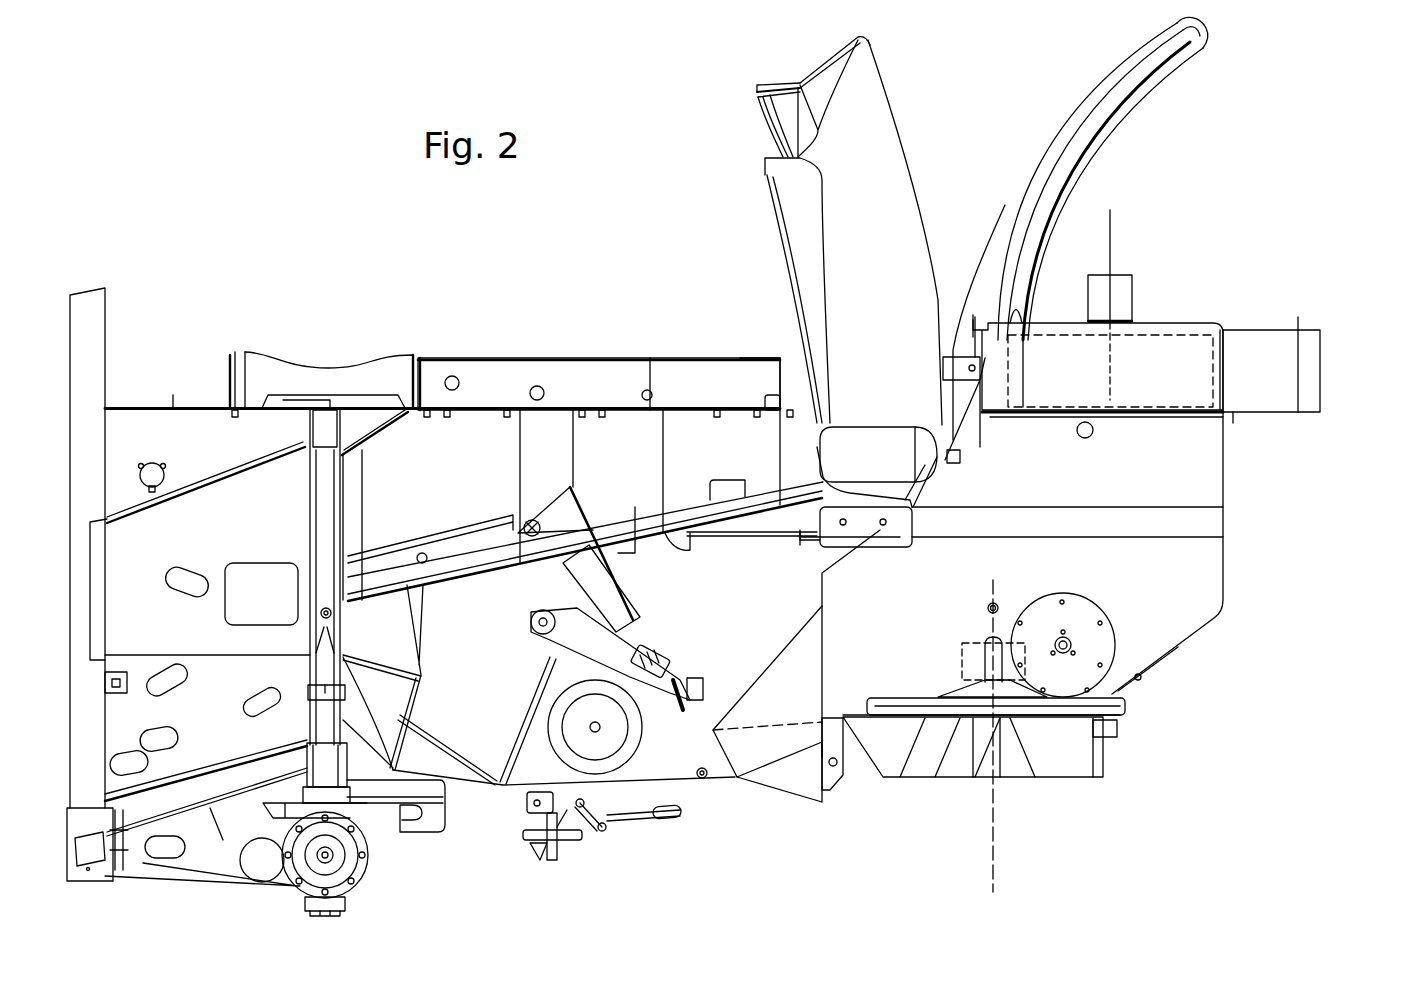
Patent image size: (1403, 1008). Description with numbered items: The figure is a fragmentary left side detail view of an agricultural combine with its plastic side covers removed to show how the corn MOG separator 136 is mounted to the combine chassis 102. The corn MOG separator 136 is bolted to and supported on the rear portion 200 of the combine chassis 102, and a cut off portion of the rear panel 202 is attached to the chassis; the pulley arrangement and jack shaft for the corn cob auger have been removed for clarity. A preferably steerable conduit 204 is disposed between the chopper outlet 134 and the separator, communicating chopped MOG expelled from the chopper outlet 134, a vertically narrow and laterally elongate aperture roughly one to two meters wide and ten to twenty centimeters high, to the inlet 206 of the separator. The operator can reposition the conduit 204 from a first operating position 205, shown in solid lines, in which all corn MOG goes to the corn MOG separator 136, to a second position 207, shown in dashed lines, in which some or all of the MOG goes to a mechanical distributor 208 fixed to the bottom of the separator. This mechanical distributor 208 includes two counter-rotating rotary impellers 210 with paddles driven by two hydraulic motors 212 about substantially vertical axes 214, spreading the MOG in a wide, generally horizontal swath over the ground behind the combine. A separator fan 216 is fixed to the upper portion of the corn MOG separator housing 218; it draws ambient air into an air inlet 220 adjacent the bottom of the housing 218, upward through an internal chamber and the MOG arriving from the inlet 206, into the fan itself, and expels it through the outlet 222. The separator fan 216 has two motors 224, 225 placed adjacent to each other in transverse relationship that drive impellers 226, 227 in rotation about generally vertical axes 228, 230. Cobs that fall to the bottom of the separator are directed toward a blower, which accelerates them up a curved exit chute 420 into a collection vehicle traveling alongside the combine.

The combine chassis 102 is at (330, 223).
The chopper outlet 134 is at (704, 750).
The corn MOG separator 136 is at (1250, 158).
The rear portion 200 is at (547, 447).
The rear panel 202 is at (880, 110).
The conduit 204 is at (809, 805).
The first operating position 205 is at (770, 665).
The inlet 206 is at (833, 667).
The second position 207 is at (773, 786).
The mechanical distributor 208 is at (1082, 773).
The rotary impellers 210 is at (1040, 763).
The hydraulic motors 212 is at (1023, 660).
The vertical axes 214 is at (993, 873).
The separator fan 216 is at (1182, 292).
The corn MOG separator housing 218 is at (1110, 518).
The air inlet 220 is at (1160, 666).
The outlet 222 is at (1250, 330).
The motor 224 is at (1137, 234).
The motor 225 is at (1088, 296).
The impeller 226 is at (1161, 323).
The impeller 227 is at (1163, 333).
The vertical axis 228 is at (1203, 285).
The vertical axis 230 is at (1112, 212).
The curved exit chute 420 is at (1033, 138).